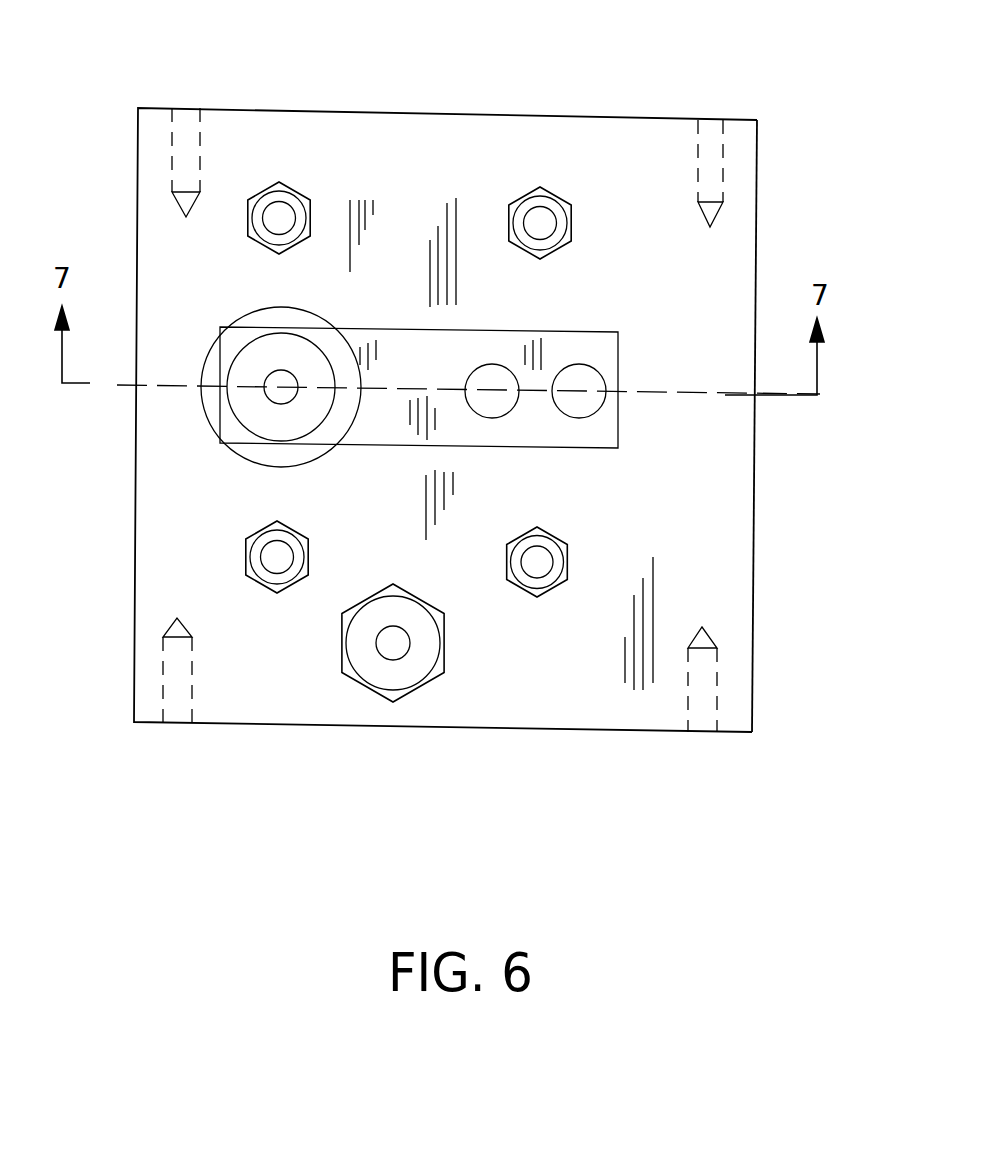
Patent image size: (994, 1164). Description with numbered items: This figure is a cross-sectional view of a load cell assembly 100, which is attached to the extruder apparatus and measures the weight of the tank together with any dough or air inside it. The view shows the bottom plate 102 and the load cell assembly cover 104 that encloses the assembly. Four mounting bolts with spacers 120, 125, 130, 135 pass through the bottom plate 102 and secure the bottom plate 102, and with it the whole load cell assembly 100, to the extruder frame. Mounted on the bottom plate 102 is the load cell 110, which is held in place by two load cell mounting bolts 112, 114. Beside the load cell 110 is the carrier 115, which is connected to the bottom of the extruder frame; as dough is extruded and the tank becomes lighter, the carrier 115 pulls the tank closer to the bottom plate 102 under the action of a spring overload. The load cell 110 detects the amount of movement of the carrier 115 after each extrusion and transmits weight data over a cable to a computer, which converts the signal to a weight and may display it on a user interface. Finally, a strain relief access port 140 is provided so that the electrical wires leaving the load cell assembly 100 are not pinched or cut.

The load cell assembly 100 is at (792, 183).
The bottom plate 102 is at (400, 148).
The load cell assembly cover 104 is at (750, 162).
The load cell 110 is at (610, 420).
The load cell mounting bolt 112 is at (590, 375).
The load cell mounting bolt 114 is at (502, 404).
The carrier 115 is at (263, 348).
The mounting bolt with spacer 120 is at (269, 183).
The mounting bolt with spacer 125 is at (546, 185).
The mounting bolt with spacer 130 is at (545, 597).
The mounting bolt with spacer 135 is at (277, 593).
The strain relief access port 140 is at (410, 697).